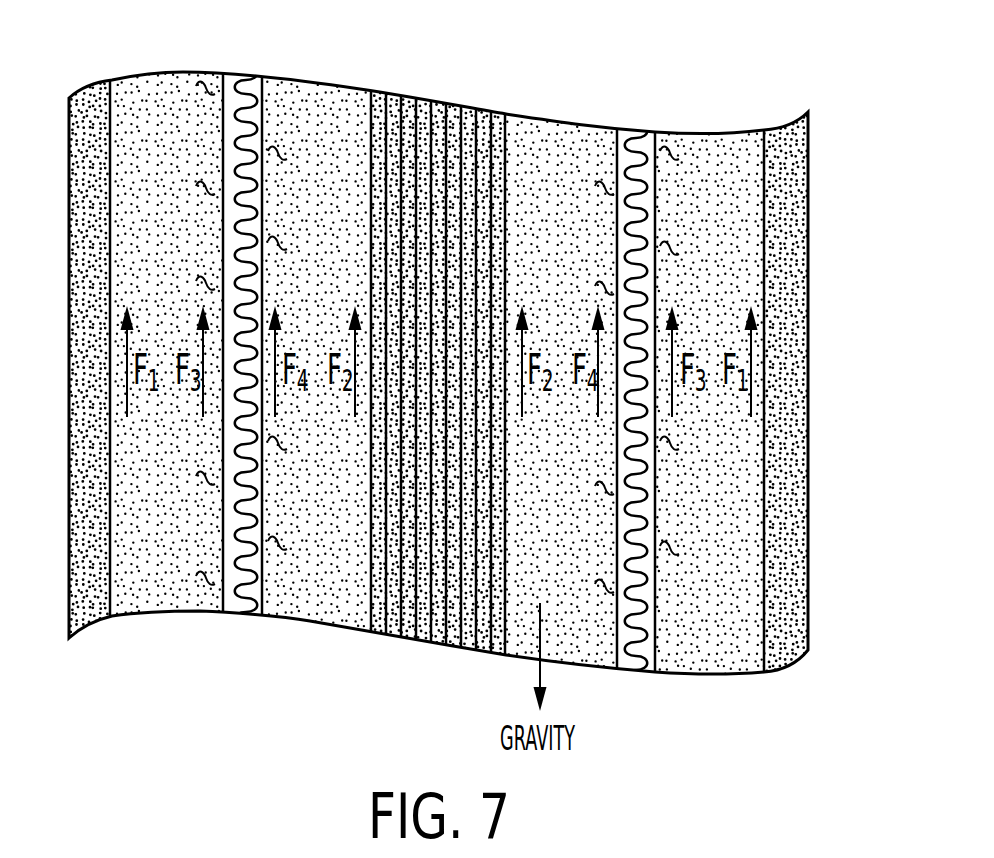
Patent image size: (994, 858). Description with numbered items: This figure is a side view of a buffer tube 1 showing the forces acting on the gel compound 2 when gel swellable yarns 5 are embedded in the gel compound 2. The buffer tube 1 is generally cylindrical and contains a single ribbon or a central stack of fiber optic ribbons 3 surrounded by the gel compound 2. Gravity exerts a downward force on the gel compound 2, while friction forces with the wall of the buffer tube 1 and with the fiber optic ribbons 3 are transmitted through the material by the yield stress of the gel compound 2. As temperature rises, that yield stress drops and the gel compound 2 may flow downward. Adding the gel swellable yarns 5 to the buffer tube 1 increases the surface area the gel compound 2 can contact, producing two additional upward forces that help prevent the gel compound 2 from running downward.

The buffer tube 1 is at (790, 223).
The gel compound 2 is at (748, 288).
The fiber optic ribbons 3 is at (440, 108).
The gel swellable yarns 5 is at (250, 88).